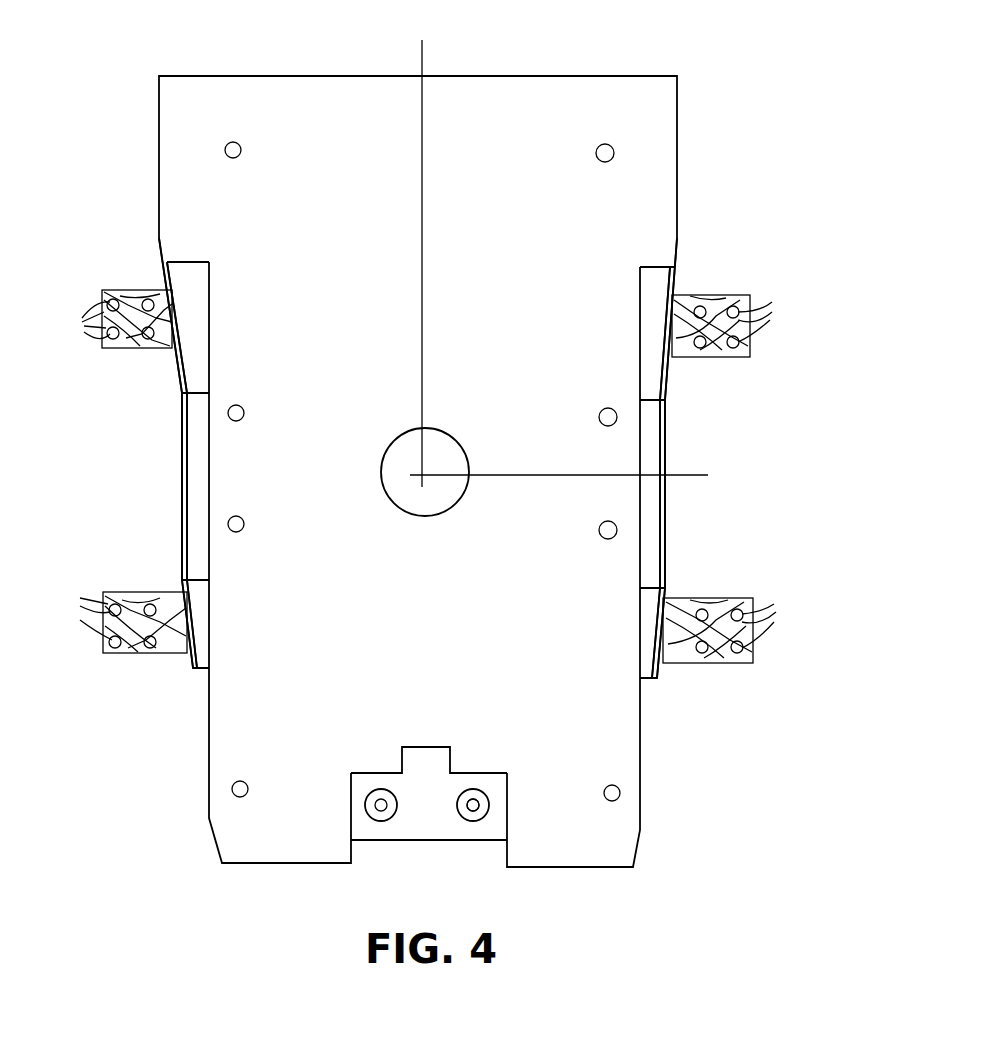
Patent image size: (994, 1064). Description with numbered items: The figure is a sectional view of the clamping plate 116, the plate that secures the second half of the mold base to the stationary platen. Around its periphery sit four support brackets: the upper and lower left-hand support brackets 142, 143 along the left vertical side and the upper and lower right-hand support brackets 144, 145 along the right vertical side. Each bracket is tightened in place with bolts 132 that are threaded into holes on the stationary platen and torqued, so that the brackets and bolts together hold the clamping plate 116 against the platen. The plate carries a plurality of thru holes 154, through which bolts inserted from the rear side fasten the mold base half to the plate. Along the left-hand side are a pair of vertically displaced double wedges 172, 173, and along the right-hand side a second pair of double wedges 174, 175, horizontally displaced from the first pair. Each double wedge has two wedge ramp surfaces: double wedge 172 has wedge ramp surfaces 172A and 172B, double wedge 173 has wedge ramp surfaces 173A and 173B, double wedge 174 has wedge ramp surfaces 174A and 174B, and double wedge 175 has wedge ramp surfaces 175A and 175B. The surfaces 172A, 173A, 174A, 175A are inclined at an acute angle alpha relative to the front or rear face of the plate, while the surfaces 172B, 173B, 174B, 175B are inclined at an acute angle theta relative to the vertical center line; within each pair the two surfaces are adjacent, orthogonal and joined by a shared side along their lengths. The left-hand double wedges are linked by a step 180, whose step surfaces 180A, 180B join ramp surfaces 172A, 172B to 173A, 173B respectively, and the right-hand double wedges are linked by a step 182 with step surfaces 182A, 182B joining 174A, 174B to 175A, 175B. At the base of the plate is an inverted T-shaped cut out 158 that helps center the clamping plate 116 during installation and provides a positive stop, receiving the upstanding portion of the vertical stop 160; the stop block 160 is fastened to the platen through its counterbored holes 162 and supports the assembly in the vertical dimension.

The clamping plate 116 is at (477, 66).
The bolts 132 is at (770, 598).
The upper left-hand support bracket 142 is at (132, 290).
The lower left-hand support bracket 143 is at (140, 592).
The upper right-hand support bracket 144 is at (706, 295).
The lower right-hand support bracket 145 is at (708, 598).
The thru holes 154 is at (241, 144).
The cut out 158 is at (350, 778).
The vertical stop 160 is at (479, 818).
The counterbored holes 162 is at (474, 788).
The upper left double wedge 172 is at (210, 300).
The wedge ramp surface 172A is at (196, 330).
The wedge ramp surface 172B is at (180, 372).
The lower left double wedge 173 is at (210, 602).
The wedge ramp surface 173A is at (212, 656).
The wedge ramp surface 173B is at (190, 664).
The upper right double wedge 174 is at (640, 296).
The wedge ramp surface 174A is at (648, 360).
The wedge ramp surface 174B is at (670, 372).
The lower right double wedge 175 is at (640, 640).
The wedge ramp surface 175A is at (646, 660).
The wedge ramp surface 175B is at (657, 680).
The step 180 is at (210, 462).
The step surface 180A is at (199, 489).
The step surface 180B is at (182, 480).
The step 182 is at (640, 486).
The step surface 182A is at (645, 560).
The step surface 182B is at (667, 508).